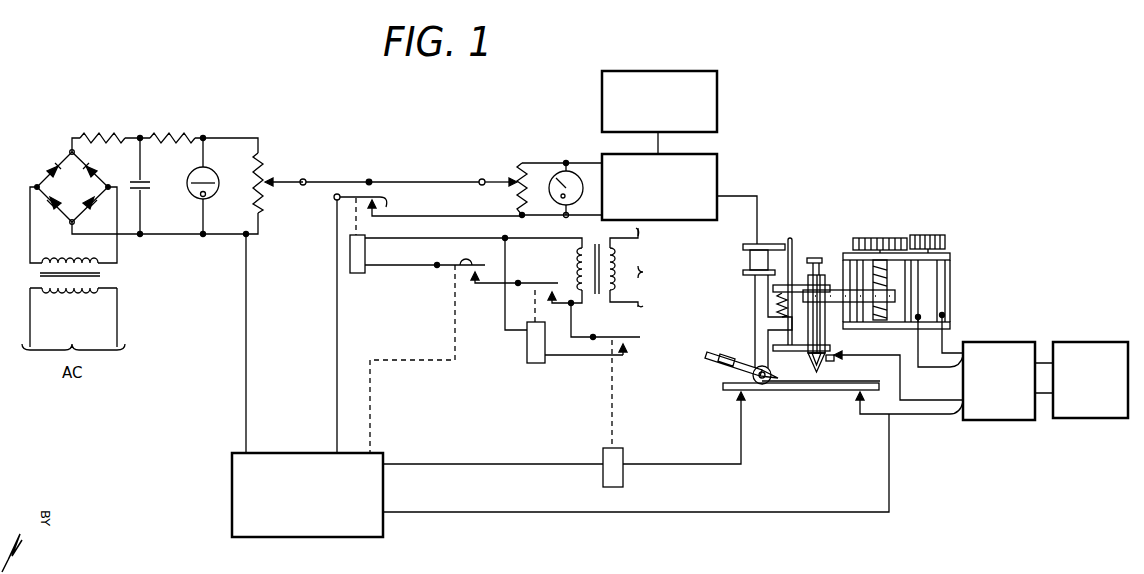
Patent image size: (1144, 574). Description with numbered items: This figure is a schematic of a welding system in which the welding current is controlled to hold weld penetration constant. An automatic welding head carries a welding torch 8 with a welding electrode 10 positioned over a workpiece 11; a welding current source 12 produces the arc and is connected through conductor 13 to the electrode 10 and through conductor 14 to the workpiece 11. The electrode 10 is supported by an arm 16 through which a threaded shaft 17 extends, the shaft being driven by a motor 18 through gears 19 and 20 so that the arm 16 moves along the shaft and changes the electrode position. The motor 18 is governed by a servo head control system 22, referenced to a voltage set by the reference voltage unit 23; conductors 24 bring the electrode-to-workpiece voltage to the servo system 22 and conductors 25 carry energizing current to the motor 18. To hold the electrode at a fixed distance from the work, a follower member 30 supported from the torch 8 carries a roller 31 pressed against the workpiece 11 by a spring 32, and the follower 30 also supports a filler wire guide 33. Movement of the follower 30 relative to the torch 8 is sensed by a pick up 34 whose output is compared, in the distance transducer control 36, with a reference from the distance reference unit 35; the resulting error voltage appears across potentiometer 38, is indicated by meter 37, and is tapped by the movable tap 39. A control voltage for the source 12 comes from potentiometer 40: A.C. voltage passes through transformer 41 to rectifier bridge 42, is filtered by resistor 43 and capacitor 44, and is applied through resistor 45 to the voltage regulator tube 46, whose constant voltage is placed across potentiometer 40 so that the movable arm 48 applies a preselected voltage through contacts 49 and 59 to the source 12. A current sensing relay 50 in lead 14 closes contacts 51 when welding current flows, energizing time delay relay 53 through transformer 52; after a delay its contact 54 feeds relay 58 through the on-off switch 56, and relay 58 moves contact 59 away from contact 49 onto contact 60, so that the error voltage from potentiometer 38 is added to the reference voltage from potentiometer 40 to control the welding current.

The welding torch 8 is at (812, 358).
The welding electrode 10 is at (815, 375).
The workpiece 11 is at (832, 392).
The welding current source 12 is at (290, 455).
The conductor 13 is at (889, 484).
The conductor 14 is at (680, 464).
The arm 16 is at (833, 291).
The threaded shaft 17 is at (887, 311).
The motor 18 is at (947, 272).
The gear 19 is at (937, 236).
The gear 20 is at (878, 238).
The servo head control system 22 is at (1010, 343).
The reference voltage unit 23 is at (1098, 343).
The conductors 24 is at (956, 414).
The conductors 25 is at (956, 363).
The follower member 30 is at (765, 331).
The roller 31 is at (761, 385).
The spring 32 is at (775, 305).
The filler wire guide 33 is at (736, 367).
The pick up 34 is at (752, 260).
The distance reference unit 35 is at (710, 94).
The distance transducer control 36 is at (712, 171).
The meter 37 is at (576, 170).
The potentiometer 38 is at (512, 196).
The movable tap 39 is at (500, 176).
The potentiometer 40 is at (270, 178).
The transformer 41 is at (108, 275).
The rectifier bridge 42 is at (60, 186).
The resistor 43 is at (117, 132).
The capacitor 44 is at (146, 190).
The resistor 45 is at (191, 132).
The voltage regulator tube 46 is at (212, 188).
The movable arm 48 is at (282, 187).
The contact 49 is at (388, 168).
The current sensing relay 50 is at (618, 478).
The contacts 51 is at (629, 339).
The transformer 52 is at (599, 300).
The time delay relay 53 is at (527, 348).
The contact 54 is at (520, 283).
The on-off switch 56 is at (447, 268).
The relay 58 is at (355, 268).
The contact 59 is at (386, 204).
The contact 60 is at (374, 210).